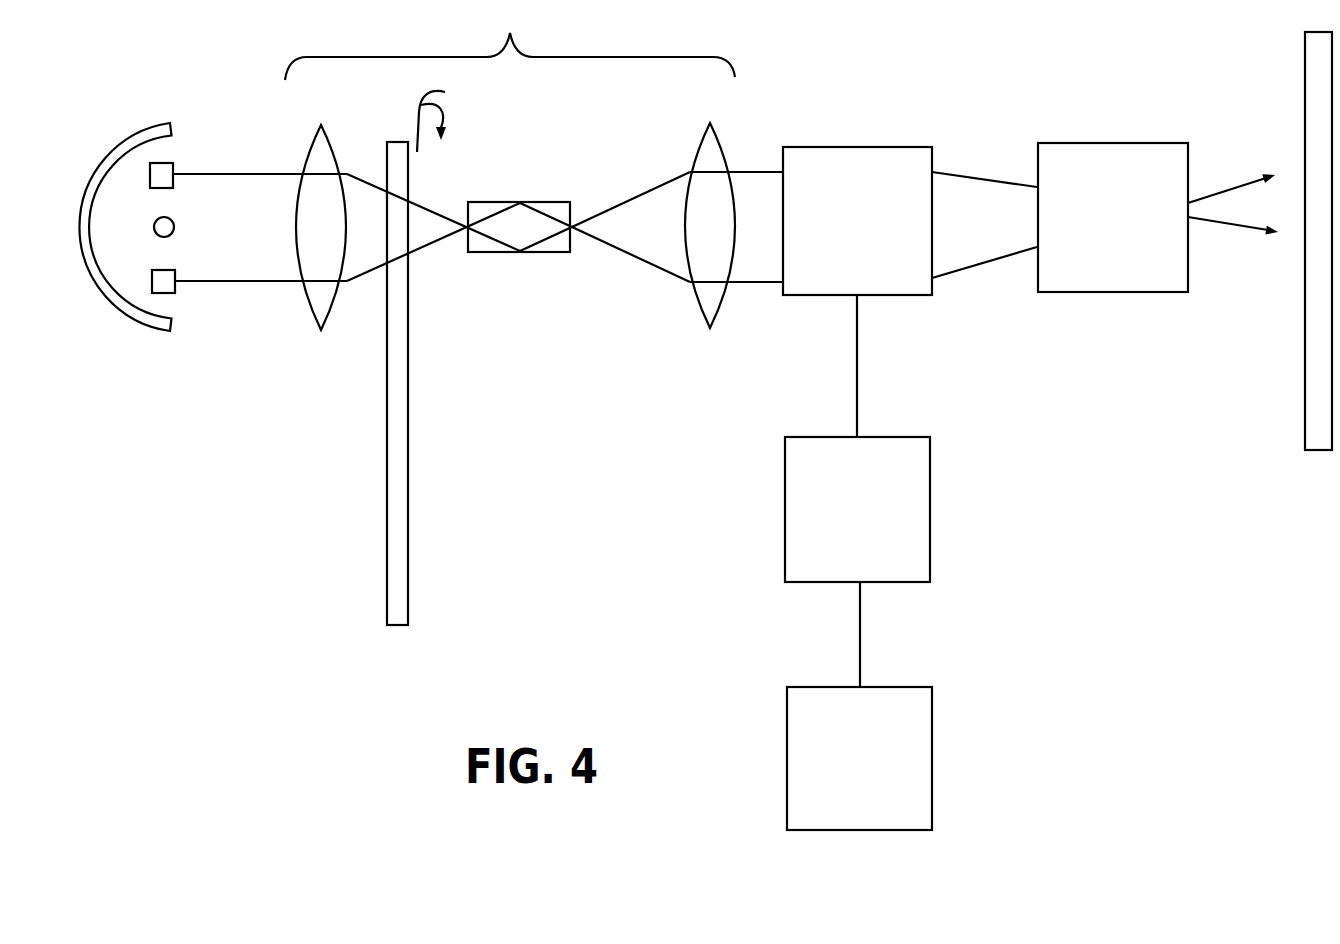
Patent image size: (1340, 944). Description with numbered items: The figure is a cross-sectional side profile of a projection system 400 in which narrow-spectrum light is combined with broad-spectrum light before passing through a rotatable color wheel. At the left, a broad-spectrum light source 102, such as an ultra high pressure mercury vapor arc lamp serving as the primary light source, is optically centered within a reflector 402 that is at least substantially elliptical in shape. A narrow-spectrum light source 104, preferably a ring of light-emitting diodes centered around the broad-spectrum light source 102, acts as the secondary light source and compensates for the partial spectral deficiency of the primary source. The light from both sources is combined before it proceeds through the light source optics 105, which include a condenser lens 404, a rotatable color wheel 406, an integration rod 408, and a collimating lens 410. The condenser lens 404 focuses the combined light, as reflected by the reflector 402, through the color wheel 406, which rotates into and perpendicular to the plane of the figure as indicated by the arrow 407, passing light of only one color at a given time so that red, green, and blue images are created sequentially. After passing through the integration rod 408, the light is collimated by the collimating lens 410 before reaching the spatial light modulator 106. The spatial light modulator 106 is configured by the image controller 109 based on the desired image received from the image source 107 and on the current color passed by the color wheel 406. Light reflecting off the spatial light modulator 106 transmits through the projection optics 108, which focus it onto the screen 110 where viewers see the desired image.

The system 400 is at (283, 647).
The reflector 402 is at (106, 160).
The broad-spectrum light source 102 is at (154, 231).
The narrow-spectrum light source 104 is at (166, 188).
The light source optics 105 is at (510, 42).
The condenser lens 404 is at (317, 328).
The rotatable color wheel 406 is at (410, 353).
The arrow 407 is at (453, 118).
The integration rod 408 is at (543, 252).
The collimating lens 410 is at (707, 320).
The spatial light modulator 106 is at (863, 147).
The image source 107 is at (932, 708).
The projection optics 108 is at (1140, 143).
The image controller 109 is at (932, 453).
The screen 110 is at (1305, 407).